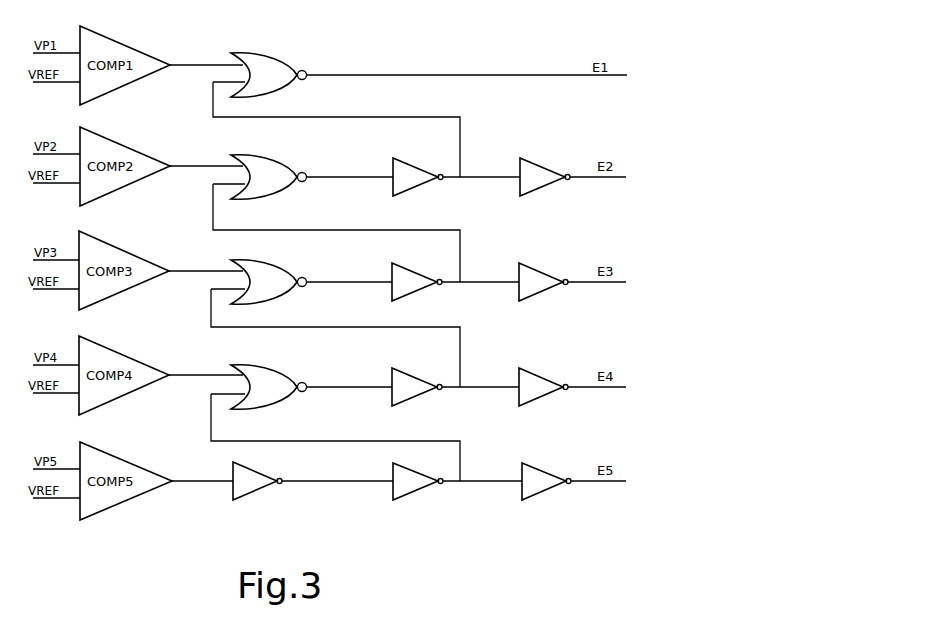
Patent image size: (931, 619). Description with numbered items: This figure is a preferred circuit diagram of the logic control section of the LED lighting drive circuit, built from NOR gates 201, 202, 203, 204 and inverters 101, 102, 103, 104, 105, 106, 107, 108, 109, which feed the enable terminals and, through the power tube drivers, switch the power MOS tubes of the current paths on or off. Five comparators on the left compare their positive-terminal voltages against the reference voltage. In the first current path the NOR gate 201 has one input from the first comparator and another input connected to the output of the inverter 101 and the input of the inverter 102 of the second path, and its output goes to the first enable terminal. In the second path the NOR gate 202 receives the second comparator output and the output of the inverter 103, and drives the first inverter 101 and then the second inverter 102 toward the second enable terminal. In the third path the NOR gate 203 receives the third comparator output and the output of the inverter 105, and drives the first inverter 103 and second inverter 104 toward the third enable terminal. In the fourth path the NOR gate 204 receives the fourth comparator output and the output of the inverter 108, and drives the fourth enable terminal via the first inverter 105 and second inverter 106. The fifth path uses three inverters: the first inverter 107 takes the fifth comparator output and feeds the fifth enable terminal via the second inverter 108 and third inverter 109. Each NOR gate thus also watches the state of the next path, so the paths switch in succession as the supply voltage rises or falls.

The NOR gate 201 is at (298, 81).
The NOR gate 202 is at (298, 183).
The NOR gate 203 is at (298, 288).
The NOR gate 204 is at (298, 393).
The first inverter 101 is at (437, 184).
The second inverter 102 is at (564, 184).
The first inverter 103 is at (436, 289).
The second inverter 104 is at (562, 289).
The first inverter 105 is at (436, 394).
The second inverter 106 is at (562, 394).
The first inverter 107 is at (276, 488).
The second inverter 108 is at (437, 488).
The third inverter 109 is at (565, 488).